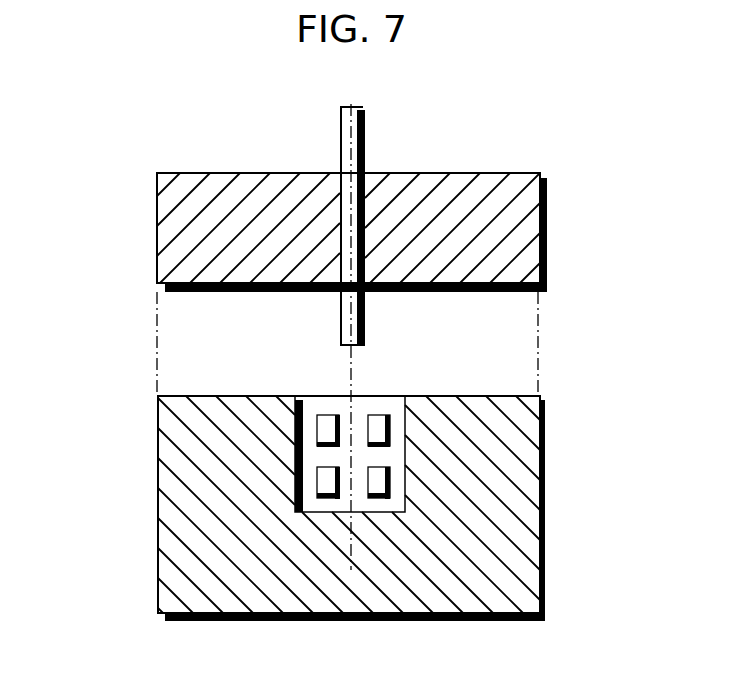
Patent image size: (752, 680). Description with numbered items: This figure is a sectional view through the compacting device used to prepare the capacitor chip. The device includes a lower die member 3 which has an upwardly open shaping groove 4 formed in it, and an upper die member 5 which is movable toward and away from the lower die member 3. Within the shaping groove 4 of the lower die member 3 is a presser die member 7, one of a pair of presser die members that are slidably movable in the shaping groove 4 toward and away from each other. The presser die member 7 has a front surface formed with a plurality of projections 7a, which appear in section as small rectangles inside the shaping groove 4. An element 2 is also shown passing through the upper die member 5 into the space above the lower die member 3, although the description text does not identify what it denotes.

The lead pin 2 is at (366, 134).
The upper die member 5 is at (547, 230).
The lower die member 3 is at (150, 541).
The shaping groove 4 is at (399, 410).
The presser die member 7 is at (316, 448).
The projections 7a is at (393, 475).